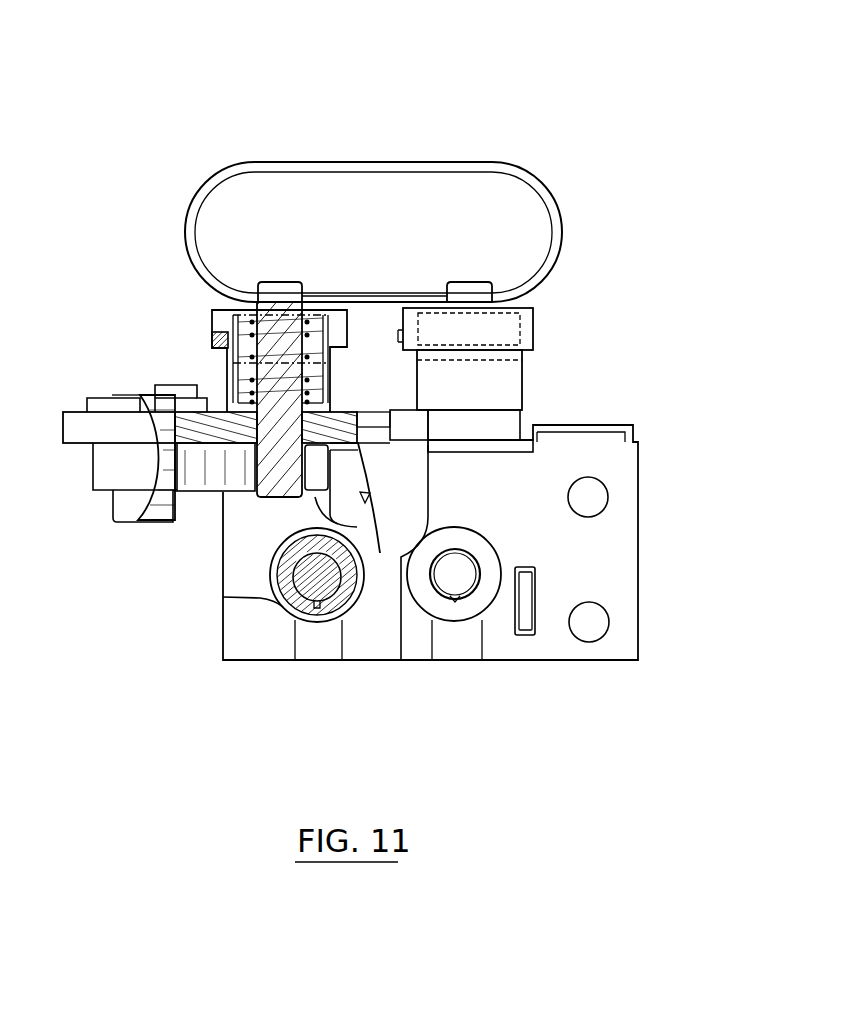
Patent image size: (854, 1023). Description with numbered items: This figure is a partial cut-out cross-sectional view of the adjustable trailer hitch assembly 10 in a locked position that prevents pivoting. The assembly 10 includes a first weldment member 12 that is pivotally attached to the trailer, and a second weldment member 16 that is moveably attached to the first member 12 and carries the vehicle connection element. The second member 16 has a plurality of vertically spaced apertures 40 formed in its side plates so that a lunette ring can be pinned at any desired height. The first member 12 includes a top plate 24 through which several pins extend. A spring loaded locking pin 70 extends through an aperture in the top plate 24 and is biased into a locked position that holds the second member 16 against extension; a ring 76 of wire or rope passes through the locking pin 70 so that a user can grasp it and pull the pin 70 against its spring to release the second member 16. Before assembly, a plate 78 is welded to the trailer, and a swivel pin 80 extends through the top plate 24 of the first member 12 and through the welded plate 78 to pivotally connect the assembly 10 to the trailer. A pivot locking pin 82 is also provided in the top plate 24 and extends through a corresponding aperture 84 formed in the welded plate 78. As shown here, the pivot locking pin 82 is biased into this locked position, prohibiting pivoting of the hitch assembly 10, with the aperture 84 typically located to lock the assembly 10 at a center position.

The adjustable trailer hitch assembly 10 is at (237, 102).
The first weldment member 12 is at (258, 628).
The second weldment member 16 is at (596, 580).
The top plate 24 is at (335, 413).
The vertically spaced apertures 40 is at (610, 489).
The spring loaded locking pins 70 is at (540, 375).
The rings 76 is at (470, 160).
The plate 78 is at (215, 467).
The swivel pins 80 is at (112, 408).
The pivot locking pins 82 is at (206, 330).
The apertures 84 is at (272, 500).